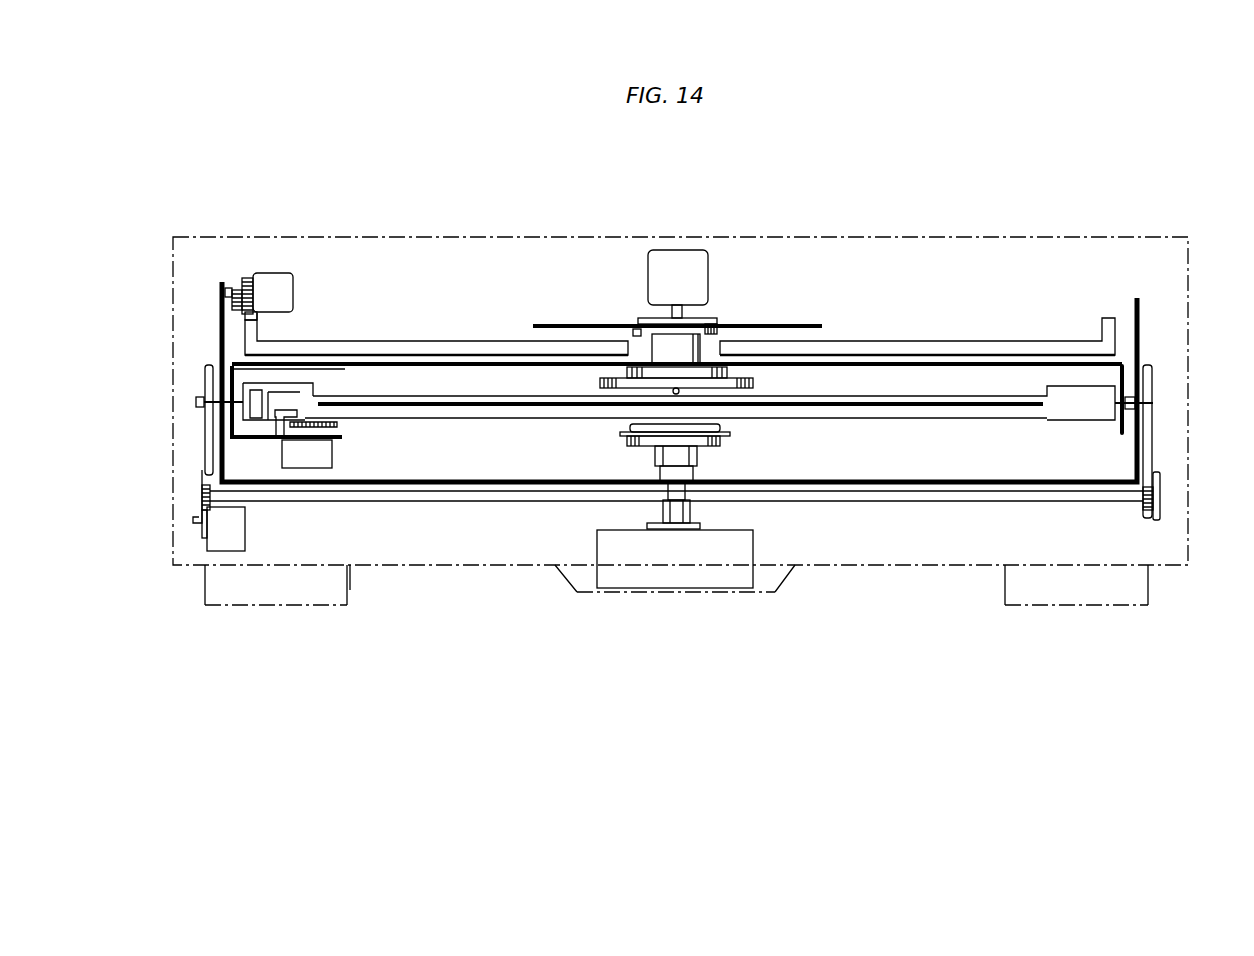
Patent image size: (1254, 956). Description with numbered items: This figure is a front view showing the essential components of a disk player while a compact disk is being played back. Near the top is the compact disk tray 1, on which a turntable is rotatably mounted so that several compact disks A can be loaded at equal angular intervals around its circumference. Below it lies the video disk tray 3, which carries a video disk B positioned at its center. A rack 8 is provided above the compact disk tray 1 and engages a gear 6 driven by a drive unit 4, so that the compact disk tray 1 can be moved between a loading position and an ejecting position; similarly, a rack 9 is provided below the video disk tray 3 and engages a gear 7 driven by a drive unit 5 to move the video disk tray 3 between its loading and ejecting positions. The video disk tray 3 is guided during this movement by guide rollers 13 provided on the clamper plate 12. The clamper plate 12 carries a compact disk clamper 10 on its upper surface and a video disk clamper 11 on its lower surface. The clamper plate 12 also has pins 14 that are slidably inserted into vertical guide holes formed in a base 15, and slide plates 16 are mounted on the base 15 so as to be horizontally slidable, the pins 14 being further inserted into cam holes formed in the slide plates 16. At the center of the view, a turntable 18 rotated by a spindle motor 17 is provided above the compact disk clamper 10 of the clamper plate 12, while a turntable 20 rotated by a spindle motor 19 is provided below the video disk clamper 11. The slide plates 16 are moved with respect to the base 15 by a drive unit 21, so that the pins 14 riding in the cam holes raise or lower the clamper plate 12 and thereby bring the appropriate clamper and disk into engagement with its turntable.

The compact disk tray 1 is at (1012, 343).
The video disk tray 3 is at (1020, 410).
The drive unit 4 is at (280, 290).
The drive unit 5 is at (305, 458).
The gear 6 is at (250, 290).
The gear 7 is at (282, 427).
The rack 8 is at (258, 320).
The rack 9 is at (272, 392).
The compact disk clamper 10 is at (650, 335).
The video disk clamper 11 is at (605, 390).
The clamper plate 12 is at (888, 365).
The guide rollers 13 is at (232, 380).
The pins 14 is at (205, 402).
The base 15 is at (222, 325).
The slide plates 16 is at (210, 442).
The spindle motor 17 is at (680, 262).
The turntable 18 is at (720, 322).
The spindle motor 19 is at (690, 555).
The turntable 20 is at (728, 440).
The drive unit 21 is at (228, 535).
The compact disk A is at (822, 325).
The video disk B is at (865, 404).